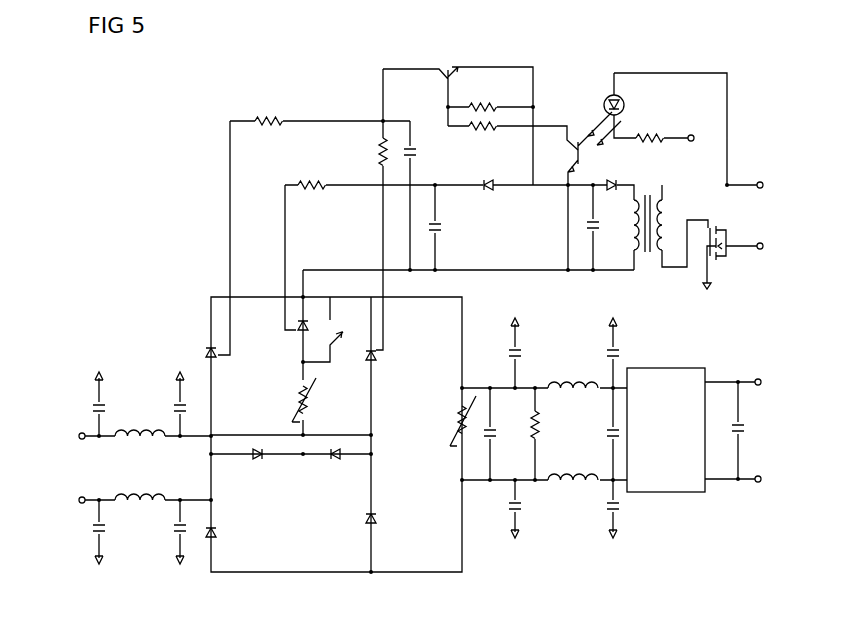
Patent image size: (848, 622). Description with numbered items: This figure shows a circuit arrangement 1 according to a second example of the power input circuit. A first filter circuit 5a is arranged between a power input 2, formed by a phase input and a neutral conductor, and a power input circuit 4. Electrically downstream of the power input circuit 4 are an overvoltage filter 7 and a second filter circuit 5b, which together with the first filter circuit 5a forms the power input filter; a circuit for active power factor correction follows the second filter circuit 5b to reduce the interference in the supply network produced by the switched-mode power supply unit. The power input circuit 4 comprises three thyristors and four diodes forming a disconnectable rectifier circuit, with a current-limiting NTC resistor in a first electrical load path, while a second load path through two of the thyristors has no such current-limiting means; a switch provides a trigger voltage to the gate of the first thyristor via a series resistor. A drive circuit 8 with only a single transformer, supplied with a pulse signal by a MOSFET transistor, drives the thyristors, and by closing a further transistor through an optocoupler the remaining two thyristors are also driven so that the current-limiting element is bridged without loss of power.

The circuit arrangement 1 is at (745, 30).
The power input 2 is at (61, 444).
The power input circuit 4 is at (199, 270).
The first filter circuit 5a is at (88, 330).
The second filter circuit 5b is at (544, 569).
The overvoltage filter 7 is at (443, 491).
The drive circuit 8 is at (199, 104).